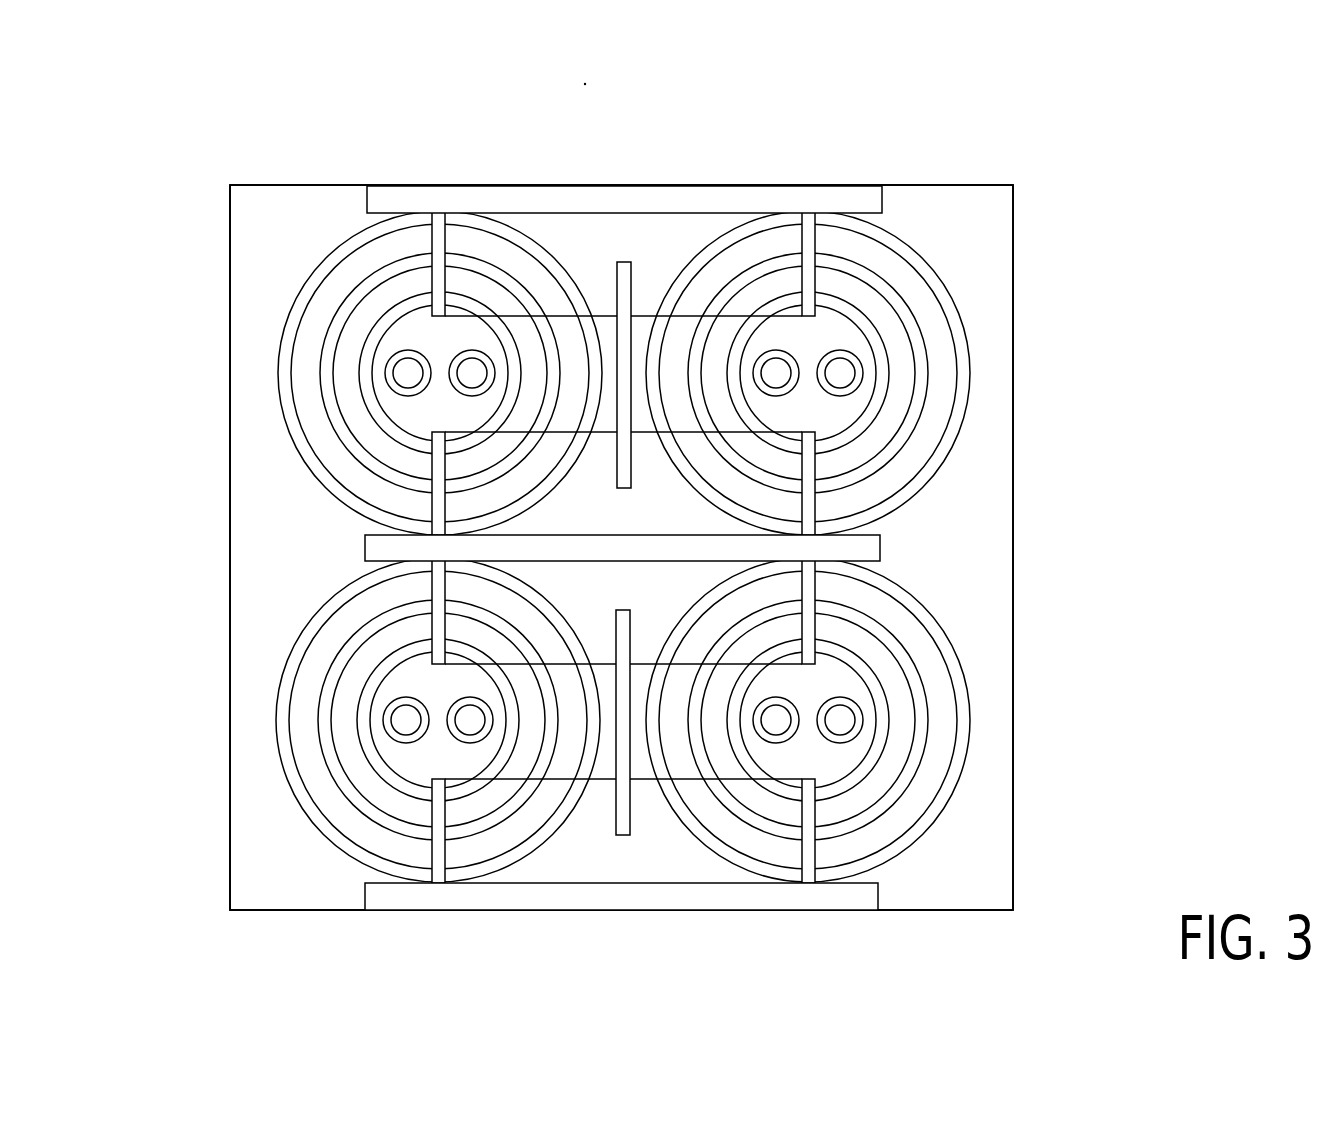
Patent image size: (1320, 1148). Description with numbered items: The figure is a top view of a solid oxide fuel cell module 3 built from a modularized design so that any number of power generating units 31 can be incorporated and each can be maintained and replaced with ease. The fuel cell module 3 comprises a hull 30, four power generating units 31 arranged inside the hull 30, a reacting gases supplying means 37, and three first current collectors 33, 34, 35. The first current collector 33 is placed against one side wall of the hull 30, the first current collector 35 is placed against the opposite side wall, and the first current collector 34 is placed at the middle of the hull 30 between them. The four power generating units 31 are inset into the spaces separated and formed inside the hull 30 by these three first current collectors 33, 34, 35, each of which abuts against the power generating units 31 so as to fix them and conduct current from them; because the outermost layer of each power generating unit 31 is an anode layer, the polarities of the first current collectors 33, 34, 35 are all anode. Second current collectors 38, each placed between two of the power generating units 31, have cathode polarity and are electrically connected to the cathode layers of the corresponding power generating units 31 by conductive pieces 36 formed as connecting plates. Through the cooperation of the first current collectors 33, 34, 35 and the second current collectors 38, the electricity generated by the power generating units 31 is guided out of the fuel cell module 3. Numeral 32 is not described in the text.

The fuel cell module 3 is at (150, 155).
The hull 30 is at (1013, 793).
The power generating unit 31 is at (277, 370).
The insulating layer 32 is at (983, 228).
The first current collector 33 is at (815, 205).
The first current collector 34 is at (868, 552).
The first current collector 35 is at (865, 897).
The conductive piece 36 is at (808, 505).
The reacting gases supplying means 37 is at (881, 389).
The second current collector 38 is at (625, 278).